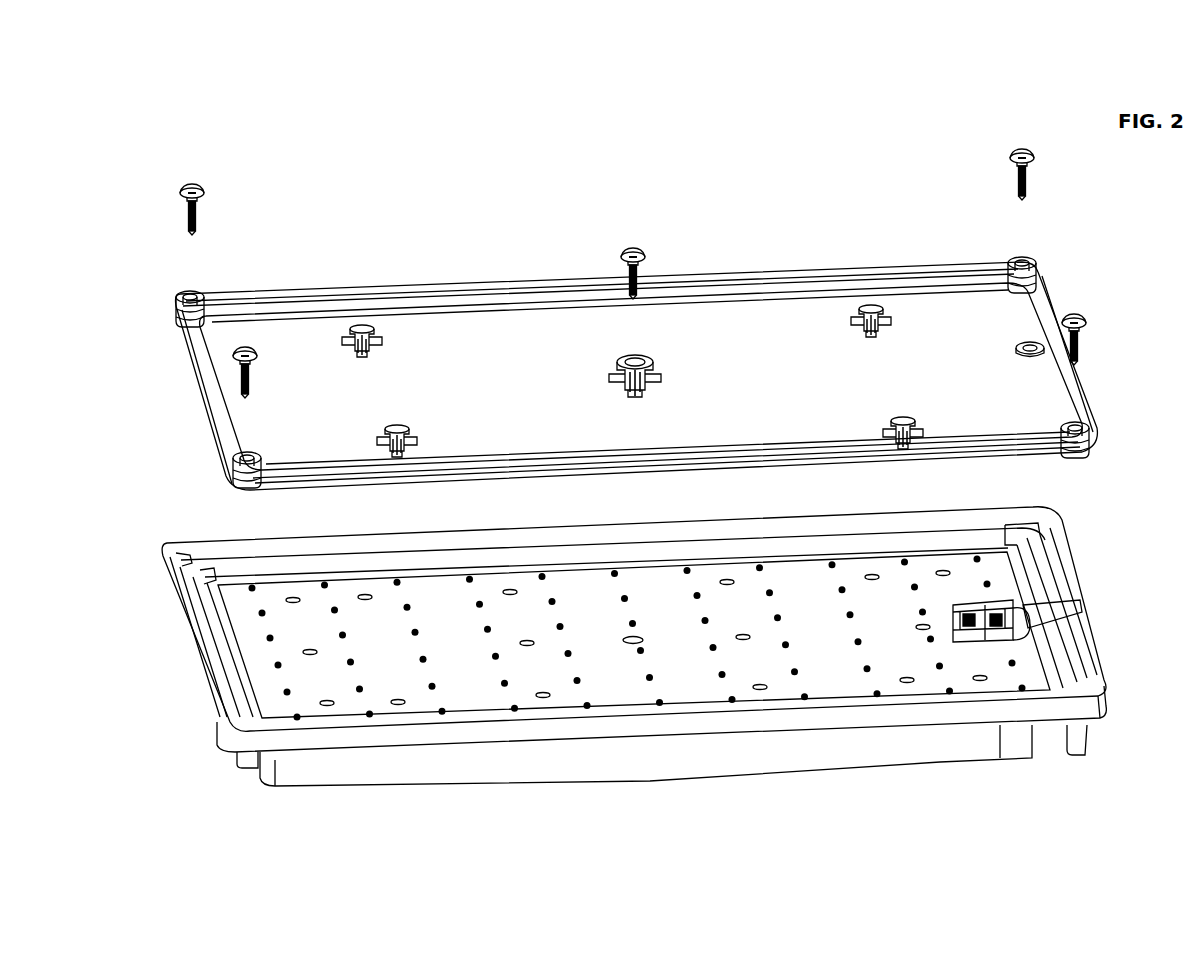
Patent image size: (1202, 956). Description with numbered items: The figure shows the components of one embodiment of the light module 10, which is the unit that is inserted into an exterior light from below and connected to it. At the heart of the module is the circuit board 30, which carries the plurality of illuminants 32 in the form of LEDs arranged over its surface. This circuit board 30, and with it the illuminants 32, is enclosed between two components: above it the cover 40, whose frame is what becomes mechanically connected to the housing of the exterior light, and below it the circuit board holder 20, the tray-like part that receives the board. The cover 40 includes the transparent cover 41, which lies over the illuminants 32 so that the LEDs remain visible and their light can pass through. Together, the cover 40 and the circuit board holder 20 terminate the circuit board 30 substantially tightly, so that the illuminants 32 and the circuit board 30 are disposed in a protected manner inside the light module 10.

The light module 10 is at (338, 146).
The circuit board holder 20 is at (310, 773).
The circuit board 30 is at (253, 638).
The illuminants 32 is at (334, 610).
The cover 40 is at (380, 276).
The transparent cover 41 is at (518, 320).